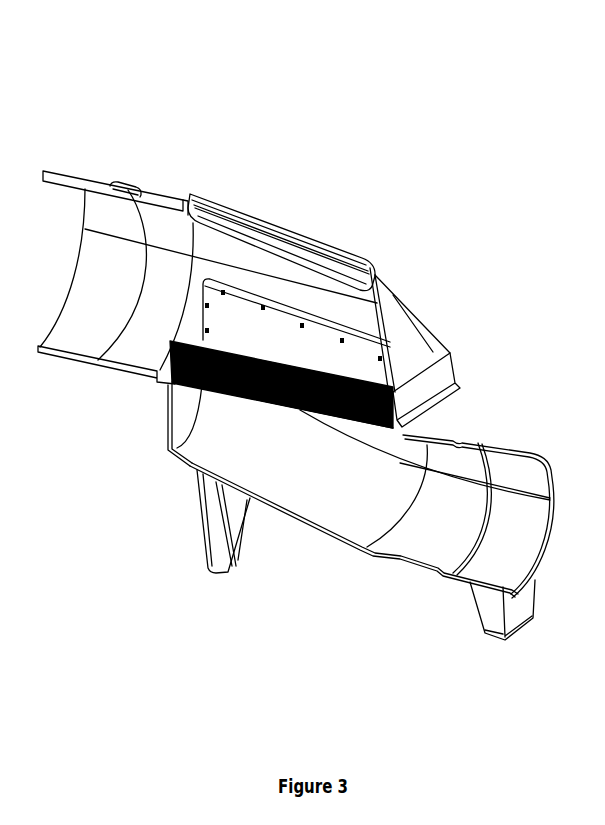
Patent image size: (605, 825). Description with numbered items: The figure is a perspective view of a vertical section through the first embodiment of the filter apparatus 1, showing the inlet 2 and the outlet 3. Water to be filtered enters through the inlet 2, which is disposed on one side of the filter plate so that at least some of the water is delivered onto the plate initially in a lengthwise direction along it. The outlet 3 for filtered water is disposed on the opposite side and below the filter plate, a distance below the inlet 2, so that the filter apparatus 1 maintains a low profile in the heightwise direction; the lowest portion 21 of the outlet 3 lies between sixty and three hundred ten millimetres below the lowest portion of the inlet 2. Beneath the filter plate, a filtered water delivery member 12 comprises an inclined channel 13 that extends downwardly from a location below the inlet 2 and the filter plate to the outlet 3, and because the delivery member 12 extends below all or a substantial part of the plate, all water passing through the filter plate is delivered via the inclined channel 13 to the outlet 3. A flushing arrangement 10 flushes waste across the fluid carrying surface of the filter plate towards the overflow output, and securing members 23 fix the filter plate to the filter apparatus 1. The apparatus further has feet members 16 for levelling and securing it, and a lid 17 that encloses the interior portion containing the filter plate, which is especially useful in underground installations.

The filter apparatus 1 is at (487, 85).
The inlet 2 is at (79, 290).
The outlet 3 is at (542, 520).
The flushing arrangement 10 is at (330, 362).
The filtered water delivery member 12 is at (345, 517).
The inclined channel 13 is at (232, 443).
The feet members 16 is at (217, 527).
The lid 17 is at (280, 232).
The lowest portion of the outlet 21 is at (142, 357).
The securing members 23 is at (261, 310).